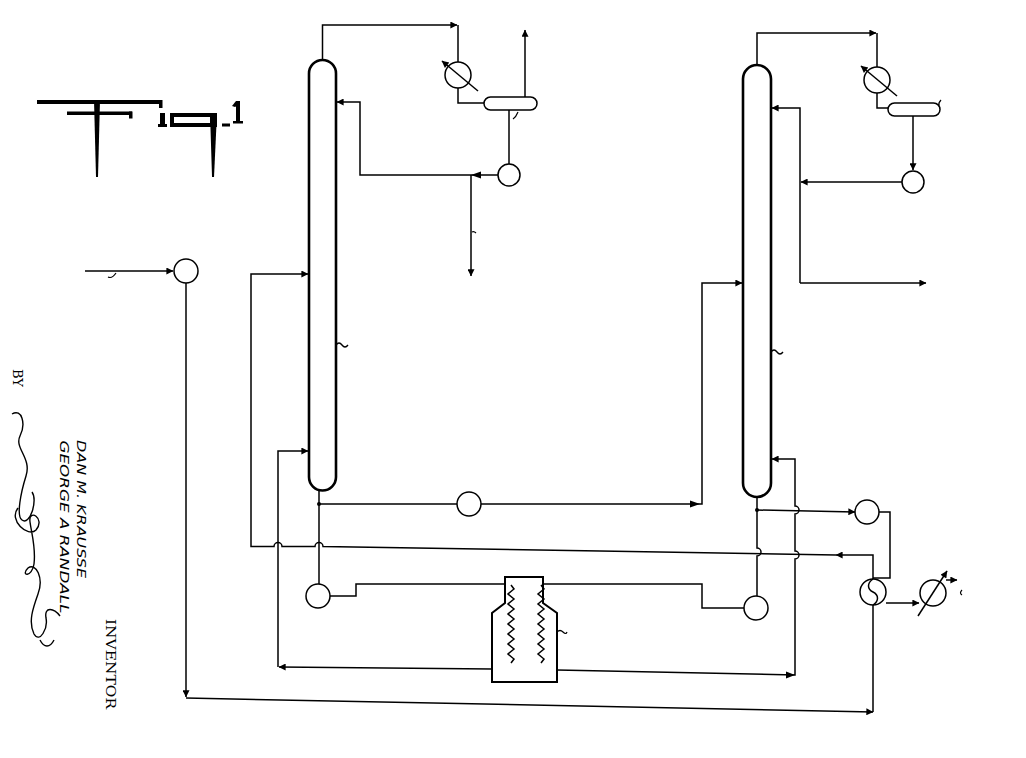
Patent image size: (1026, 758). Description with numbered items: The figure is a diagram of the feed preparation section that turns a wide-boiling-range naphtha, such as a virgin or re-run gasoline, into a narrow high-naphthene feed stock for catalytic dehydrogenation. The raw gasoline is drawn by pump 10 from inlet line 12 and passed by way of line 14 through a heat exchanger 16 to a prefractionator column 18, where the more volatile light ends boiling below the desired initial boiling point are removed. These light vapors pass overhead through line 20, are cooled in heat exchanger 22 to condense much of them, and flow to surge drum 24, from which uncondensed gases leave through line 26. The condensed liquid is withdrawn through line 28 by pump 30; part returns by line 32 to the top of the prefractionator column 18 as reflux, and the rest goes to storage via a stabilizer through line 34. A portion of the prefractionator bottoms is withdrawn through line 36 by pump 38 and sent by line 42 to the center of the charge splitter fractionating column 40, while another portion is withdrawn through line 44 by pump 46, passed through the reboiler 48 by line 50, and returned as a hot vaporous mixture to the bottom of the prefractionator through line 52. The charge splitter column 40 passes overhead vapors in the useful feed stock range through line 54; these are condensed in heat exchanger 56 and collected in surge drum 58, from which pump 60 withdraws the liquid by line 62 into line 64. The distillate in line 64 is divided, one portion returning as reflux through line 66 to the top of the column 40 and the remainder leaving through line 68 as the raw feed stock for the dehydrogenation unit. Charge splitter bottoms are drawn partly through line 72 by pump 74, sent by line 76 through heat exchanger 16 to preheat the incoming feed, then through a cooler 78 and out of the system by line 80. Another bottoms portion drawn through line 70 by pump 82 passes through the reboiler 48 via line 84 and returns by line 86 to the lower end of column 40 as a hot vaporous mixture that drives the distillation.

The pump 10 is at (192, 264).
The inlet line 12 is at (165, 269).
The line 14 is at (250, 360).
The heat exchanger 16 is at (861, 588).
The prefractionator column 18 is at (309, 124).
The line 20 is at (392, 20).
The heat exchanger 22 is at (457, 61).
The surge drum 24 is at (531, 97).
The line 26 is at (523, 62).
The line 28 is at (510, 147).
The pump 30 is at (521, 171).
The line 32 is at (360, 122).
The line 34 is at (464, 207).
The line 36 is at (353, 495).
The pump 38 is at (482, 493).
The charge splitter fractionating column 40 is at (742, 170).
The line 42 is at (699, 335).
The line 44 is at (320, 522).
The pump 46 is at (307, 585).
The reboiler 48 is at (512, 575).
The line 50 is at (444, 582).
The line 52 is at (277, 614).
The line 54 is at (789, 27).
The heat exchanger 56 is at (883, 73).
The surge drum 58 is at (926, 118).
The pump 60 is at (921, 178).
The line 62 is at (911, 147).
The line 64 is at (812, 172).
The line 66 is at (800, 136).
The line 68 is at (800, 256).
The line 70 is at (754, 528).
The line 72 is at (813, 500).
The pump 74 is at (878, 498).
The line 76 is at (890, 534).
The cooler 78 is at (933, 580).
The line 80 is at (966, 570).
The pump 82 is at (741, 597).
The line 84 is at (636, 587).
The line 86 is at (800, 455).